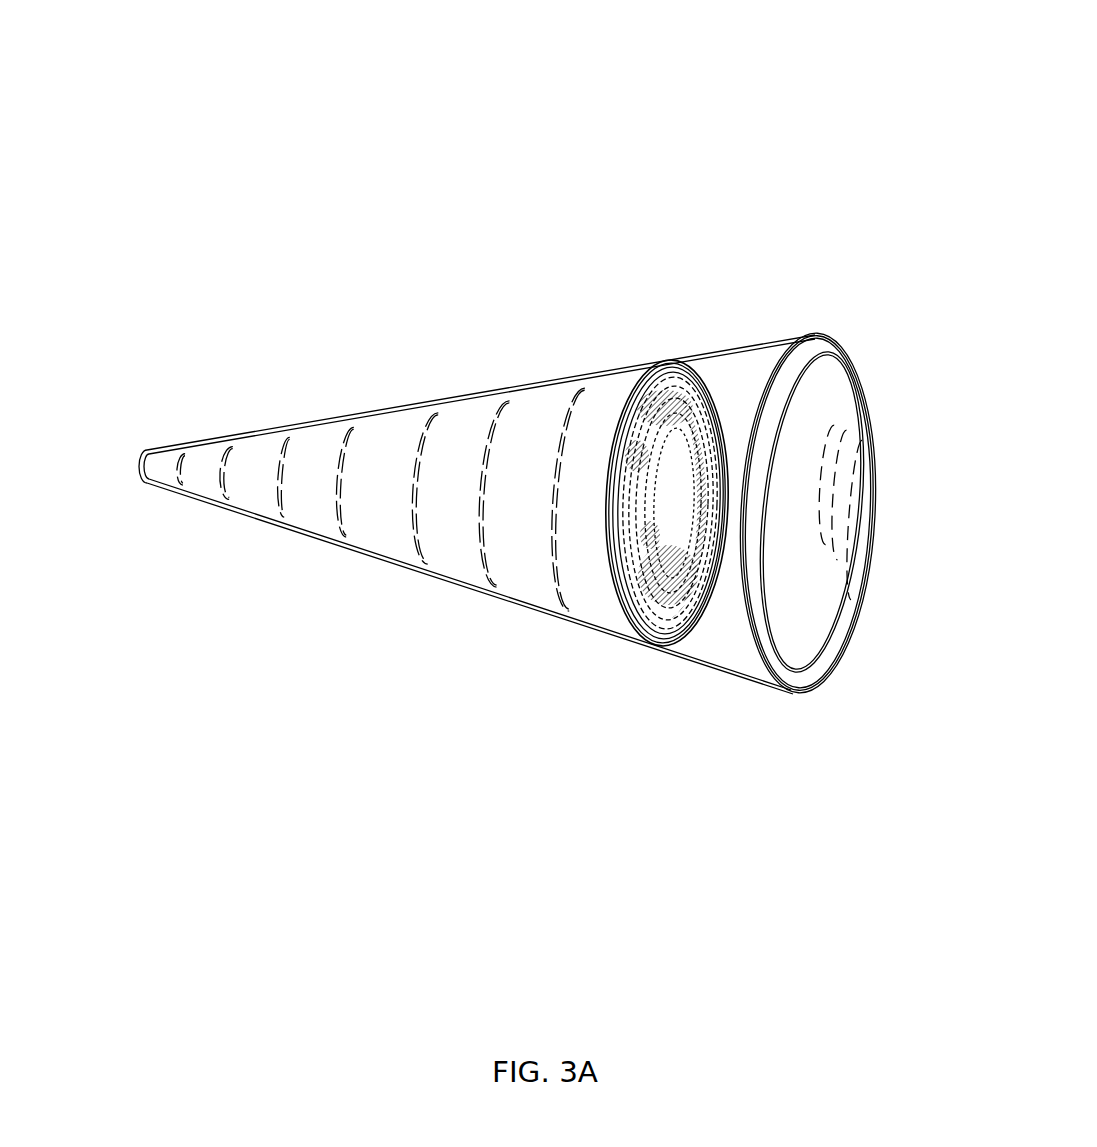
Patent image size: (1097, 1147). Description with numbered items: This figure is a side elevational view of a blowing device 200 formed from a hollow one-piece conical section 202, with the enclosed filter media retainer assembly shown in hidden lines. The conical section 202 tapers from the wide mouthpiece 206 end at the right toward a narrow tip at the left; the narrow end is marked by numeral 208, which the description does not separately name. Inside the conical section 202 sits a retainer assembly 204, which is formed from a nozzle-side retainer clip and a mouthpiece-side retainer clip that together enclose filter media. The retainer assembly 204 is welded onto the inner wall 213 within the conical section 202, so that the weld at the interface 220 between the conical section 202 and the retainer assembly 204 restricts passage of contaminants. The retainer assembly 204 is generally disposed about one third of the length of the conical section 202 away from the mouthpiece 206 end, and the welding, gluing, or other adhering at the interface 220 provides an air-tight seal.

The blowing device 200 is at (820, 96).
The conical section 202 is at (478, 392).
The retainer assembly 204 is at (637, 622).
The mouthpiece 206 is at (851, 457).
The tip end 208 is at (137, 478).
The inner wall 213 is at (393, 559).
The interface 220 is at (632, 637).